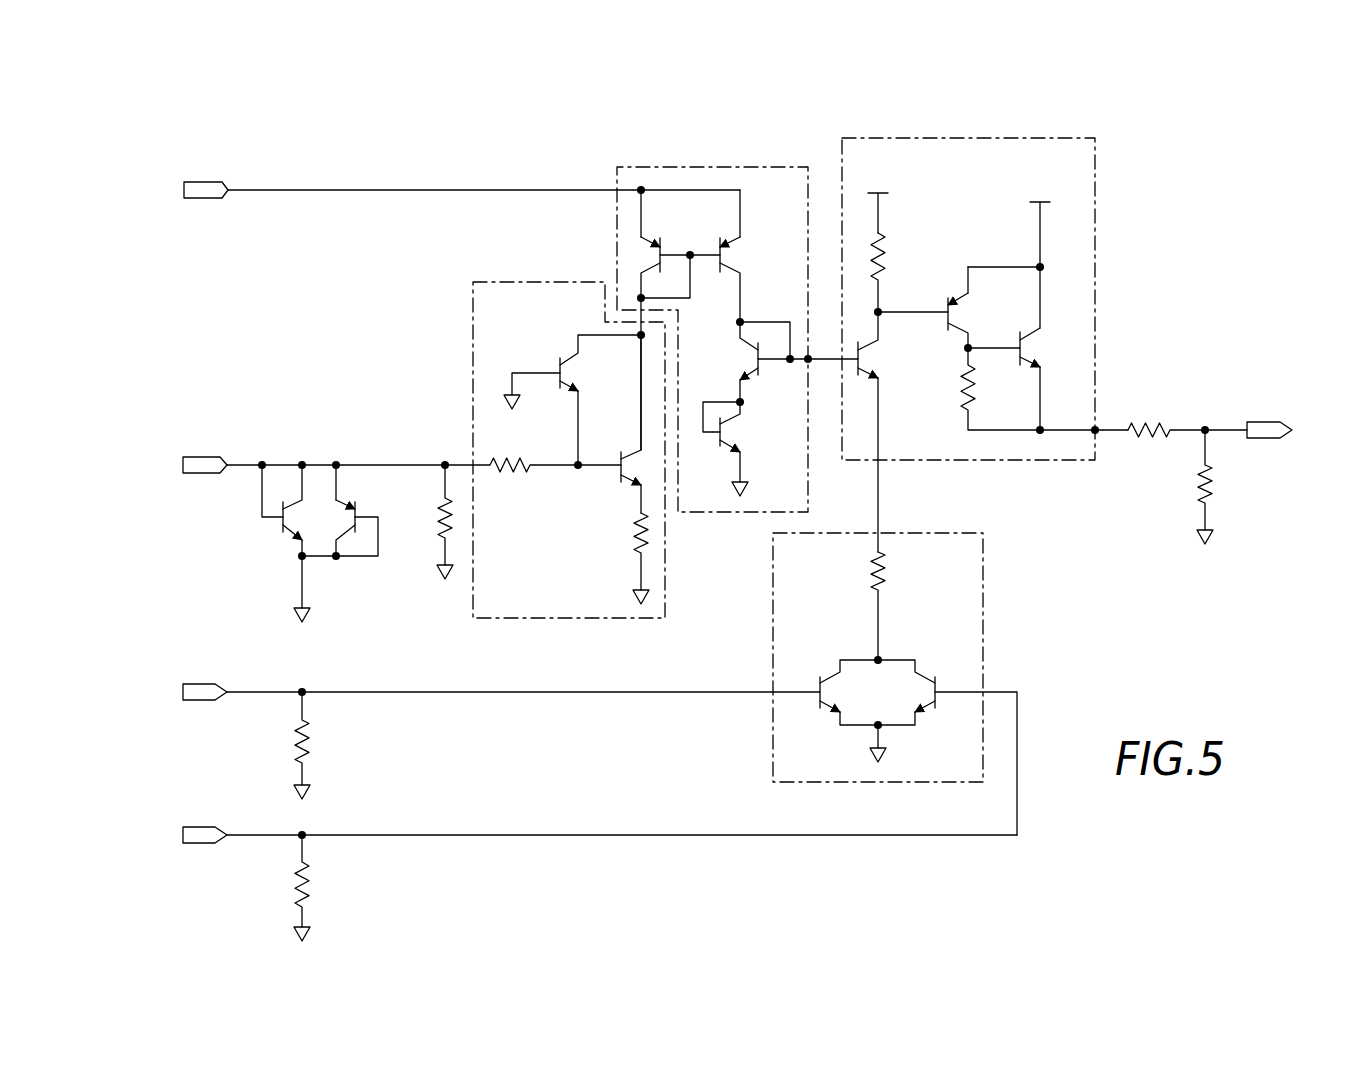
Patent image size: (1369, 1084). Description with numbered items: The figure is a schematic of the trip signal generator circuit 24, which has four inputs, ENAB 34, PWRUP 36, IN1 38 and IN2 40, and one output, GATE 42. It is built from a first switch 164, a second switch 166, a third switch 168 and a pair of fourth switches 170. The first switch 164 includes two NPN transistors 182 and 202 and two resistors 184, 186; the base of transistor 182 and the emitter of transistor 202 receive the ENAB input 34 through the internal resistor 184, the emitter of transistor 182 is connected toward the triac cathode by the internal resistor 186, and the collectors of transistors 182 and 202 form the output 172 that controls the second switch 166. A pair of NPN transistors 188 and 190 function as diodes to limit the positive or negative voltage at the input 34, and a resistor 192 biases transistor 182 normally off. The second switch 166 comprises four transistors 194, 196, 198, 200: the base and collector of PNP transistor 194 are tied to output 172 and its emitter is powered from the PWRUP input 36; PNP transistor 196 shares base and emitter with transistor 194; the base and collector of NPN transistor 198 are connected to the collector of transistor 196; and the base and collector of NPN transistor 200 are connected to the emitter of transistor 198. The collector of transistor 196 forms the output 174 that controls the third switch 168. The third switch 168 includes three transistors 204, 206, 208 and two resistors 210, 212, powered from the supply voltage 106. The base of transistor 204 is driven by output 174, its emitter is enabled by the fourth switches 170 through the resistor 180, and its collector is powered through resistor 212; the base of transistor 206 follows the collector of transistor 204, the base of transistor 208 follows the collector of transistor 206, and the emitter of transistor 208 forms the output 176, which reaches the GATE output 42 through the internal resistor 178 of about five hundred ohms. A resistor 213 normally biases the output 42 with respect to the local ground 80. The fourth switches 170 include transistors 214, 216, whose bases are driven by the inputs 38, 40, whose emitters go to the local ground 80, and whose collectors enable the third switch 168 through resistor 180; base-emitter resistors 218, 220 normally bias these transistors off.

The trip signal generator circuit 24 is at (731, 535).
The ENAB input 34 is at (197, 457).
The PWRUP input 36 is at (197, 181).
The IN1 input 38 is at (197, 683).
The IN2 input 40 is at (197, 826).
The GATE output 42 is at (1258, 422).
The local ground 80 is at (636, 590).
The voltage 106 is at (883, 193).
The first switch 164 is at (550, 619).
The second switch 166 is at (683, 167).
The third switch 168 is at (1100, 262).
The fourth switches 170 is at (985, 568).
The output of first switch 172 is at (638, 340).
The output of second switch 174 is at (806, 362).
The output of third switch 176 is at (1095, 428).
The internal resistor 178 is at (1147, 420).
The resistor 180 is at (886, 573).
The NPN transistor 182 is at (618, 478).
The internal resistor 184 is at (498, 472).
The internal resistor 186 is at (636, 536).
The NPN transistor 188 is at (282, 531).
The NPN transistor 190 is at (352, 503).
The resistor 192 is at (440, 533).
The PNP transistor 194 is at (648, 236).
The PNP transistor 196 is at (732, 268).
The NPN transistor 198 is at (745, 347).
The NPN transistor 200 is at (718, 446).
The NPN transistor 202 is at (570, 356).
The transistor 204 is at (875, 348).
The transistor 206 is at (958, 298).
The transistor 208 is at (1032, 330).
The resistor 210 is at (960, 398).
The resistor 212 is at (885, 247).
The resistor 213 is at (1213, 484).
The transistor 214 is at (835, 680).
The transistor 216 is at (935, 705).
The base-emitter resistor 218 is at (312, 731).
The base-emitter resistor 220 is at (312, 872).